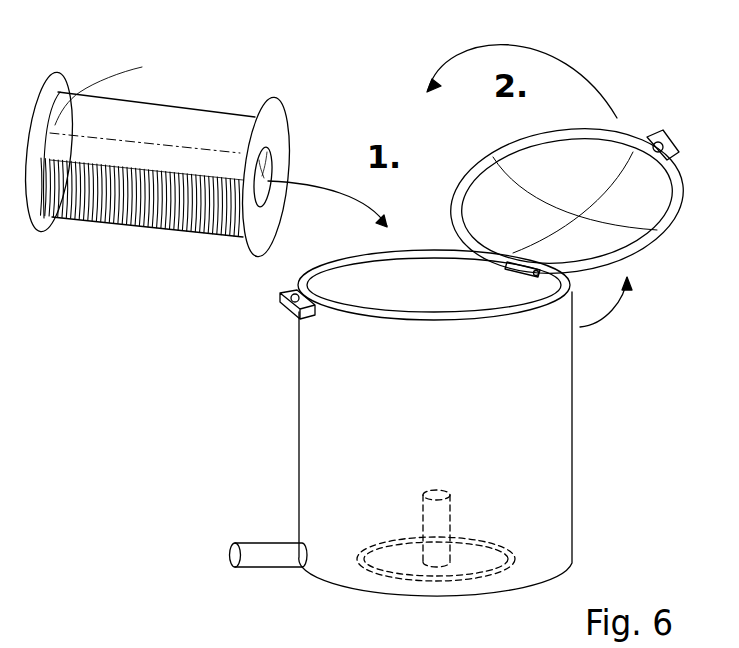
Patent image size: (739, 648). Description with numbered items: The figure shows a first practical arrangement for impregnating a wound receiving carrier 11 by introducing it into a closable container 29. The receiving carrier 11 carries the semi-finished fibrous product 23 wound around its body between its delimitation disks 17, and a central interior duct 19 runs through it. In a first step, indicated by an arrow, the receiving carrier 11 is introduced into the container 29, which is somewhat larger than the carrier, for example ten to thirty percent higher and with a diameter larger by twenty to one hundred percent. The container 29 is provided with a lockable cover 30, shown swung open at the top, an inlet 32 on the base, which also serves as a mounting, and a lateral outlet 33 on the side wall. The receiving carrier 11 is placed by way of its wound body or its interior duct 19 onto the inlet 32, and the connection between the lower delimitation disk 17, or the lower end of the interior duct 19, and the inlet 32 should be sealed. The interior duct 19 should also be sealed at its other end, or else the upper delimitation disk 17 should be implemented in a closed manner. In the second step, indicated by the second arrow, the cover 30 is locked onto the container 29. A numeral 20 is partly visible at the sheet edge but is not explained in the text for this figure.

The receiving carrier 11 is at (308, 142).
The delimitation disk 17 is at (43, 227).
The interior duct 19 is at (267, 188).
The semi-finished fibrous product 23 is at (113, 74).
The container 29 is at (573, 520).
The cover 30 is at (653, 252).
The inlet 32 is at (427, 522).
The outlet 33 is at (257, 548).
The dispenser 20 is at (222, 642).